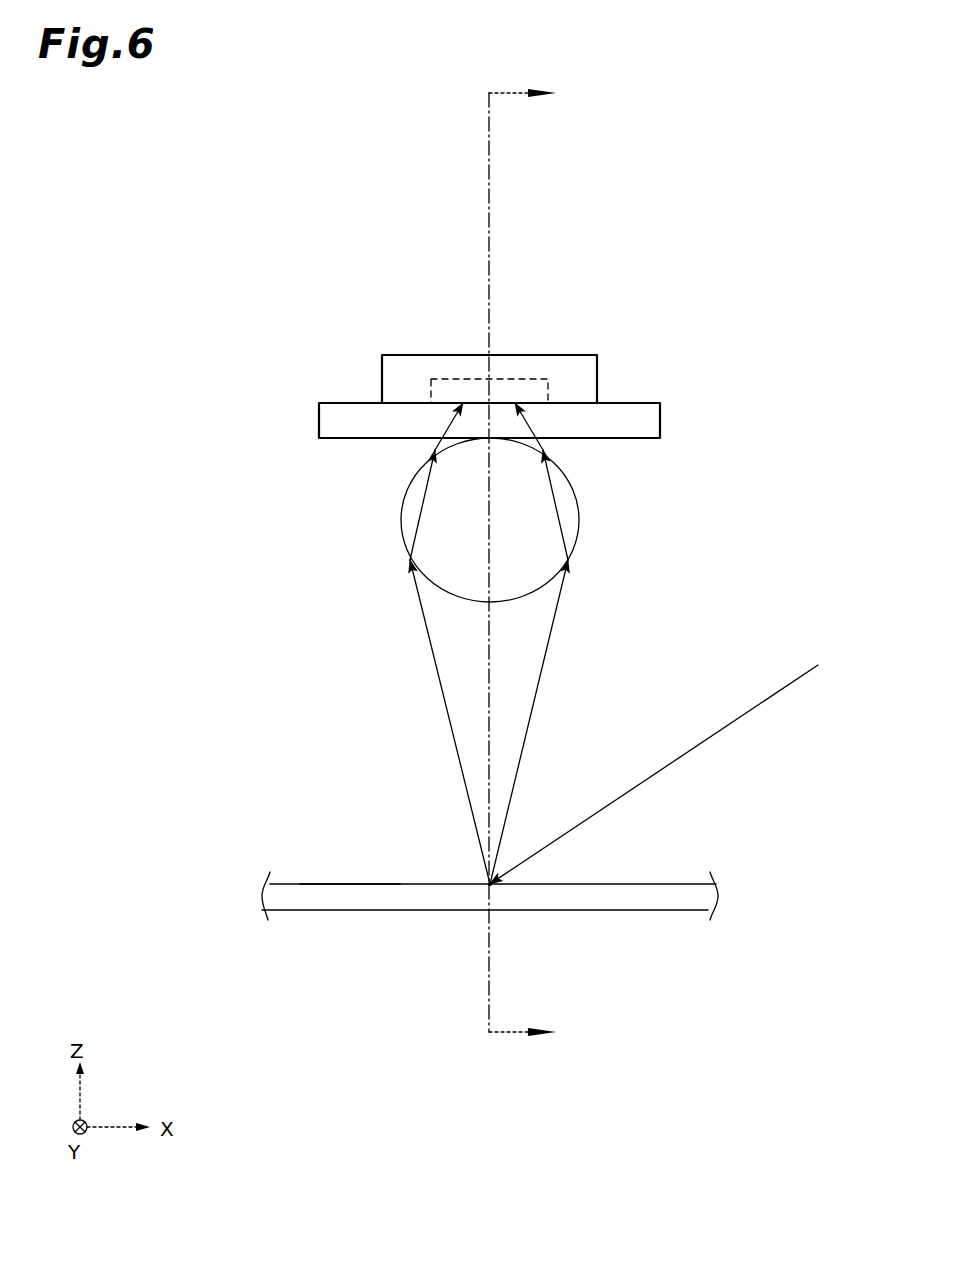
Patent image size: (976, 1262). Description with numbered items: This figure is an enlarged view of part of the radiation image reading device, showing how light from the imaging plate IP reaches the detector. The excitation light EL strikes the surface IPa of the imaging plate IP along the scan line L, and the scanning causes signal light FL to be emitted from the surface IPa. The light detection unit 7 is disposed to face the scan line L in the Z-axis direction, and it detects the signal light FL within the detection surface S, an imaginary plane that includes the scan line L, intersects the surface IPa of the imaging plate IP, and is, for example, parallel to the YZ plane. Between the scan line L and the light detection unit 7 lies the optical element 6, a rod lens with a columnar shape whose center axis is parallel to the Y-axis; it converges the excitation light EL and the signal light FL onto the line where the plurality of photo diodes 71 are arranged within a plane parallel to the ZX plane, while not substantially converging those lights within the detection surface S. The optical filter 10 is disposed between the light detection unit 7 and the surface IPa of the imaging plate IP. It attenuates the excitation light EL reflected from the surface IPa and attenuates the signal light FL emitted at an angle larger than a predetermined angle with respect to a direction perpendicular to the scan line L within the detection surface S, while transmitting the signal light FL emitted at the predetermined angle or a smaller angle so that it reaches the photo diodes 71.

The optical element 6 is at (578, 504).
The light detection unit 7 is at (597, 382).
The photo diodes 71 is at (514, 380).
The optical filter 10 is at (660, 420).
The detection surface S is at (489, 192).
The signal light FL is at (448, 425).
The excitation light EL is at (698, 744).
The scan line L is at (488, 883).
The imaging plate IP is at (303, 911).
The surface IPa is at (336, 884).